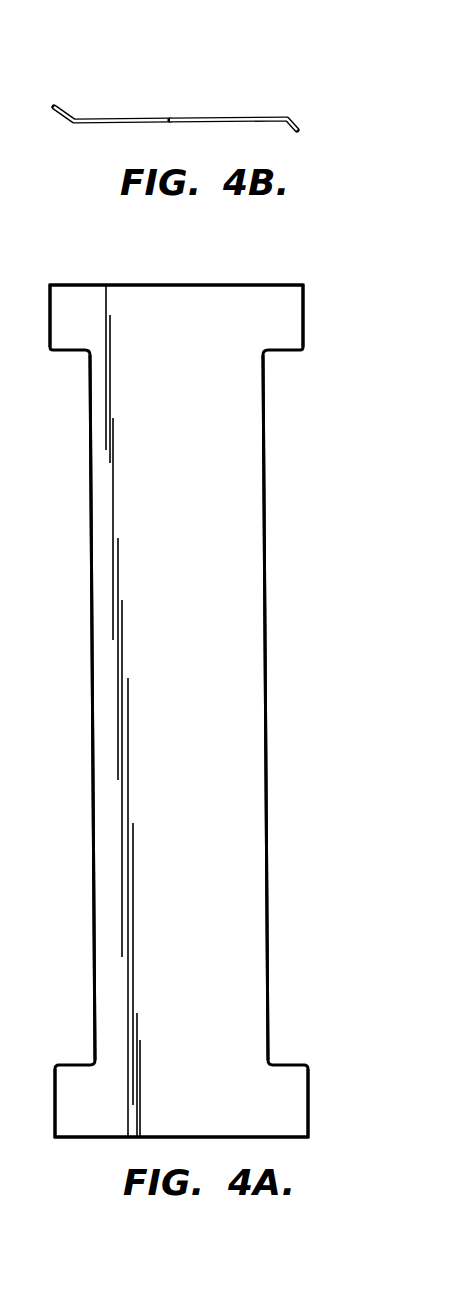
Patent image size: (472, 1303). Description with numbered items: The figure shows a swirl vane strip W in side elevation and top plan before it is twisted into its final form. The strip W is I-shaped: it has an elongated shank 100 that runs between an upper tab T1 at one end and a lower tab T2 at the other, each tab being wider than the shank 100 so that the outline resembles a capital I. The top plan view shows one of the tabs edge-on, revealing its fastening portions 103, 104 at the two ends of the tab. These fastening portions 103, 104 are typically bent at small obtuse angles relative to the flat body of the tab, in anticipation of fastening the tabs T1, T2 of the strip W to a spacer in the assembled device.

In FIG. 4A, the elongated shank 100 is at (252, 800).
In FIG. 4B, the fastening portion 103 is at (65, 107).
In FIG. 4B, the fastening portion 104 is at (290, 117).
In FIG. 4A, the upper tab T1 is at (290, 320).
In FIG. 4A, the lower tab T2 is at (293, 1108).
In FIG. 4A, the swirl vane strip W is at (243, 642).